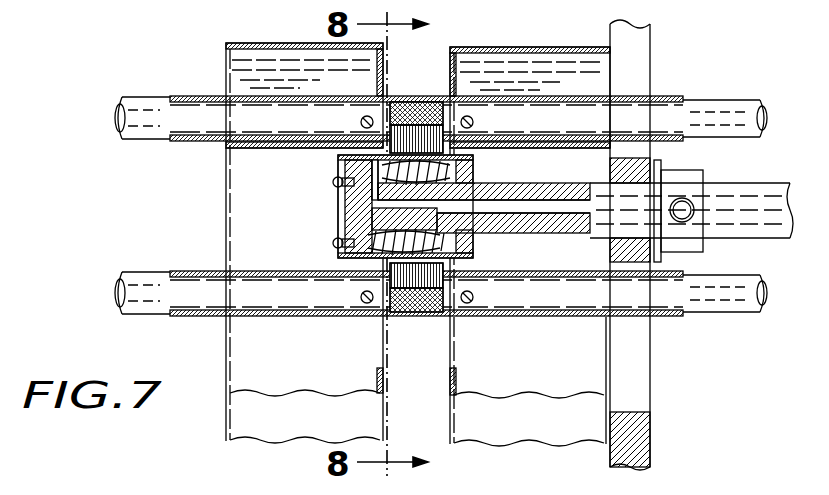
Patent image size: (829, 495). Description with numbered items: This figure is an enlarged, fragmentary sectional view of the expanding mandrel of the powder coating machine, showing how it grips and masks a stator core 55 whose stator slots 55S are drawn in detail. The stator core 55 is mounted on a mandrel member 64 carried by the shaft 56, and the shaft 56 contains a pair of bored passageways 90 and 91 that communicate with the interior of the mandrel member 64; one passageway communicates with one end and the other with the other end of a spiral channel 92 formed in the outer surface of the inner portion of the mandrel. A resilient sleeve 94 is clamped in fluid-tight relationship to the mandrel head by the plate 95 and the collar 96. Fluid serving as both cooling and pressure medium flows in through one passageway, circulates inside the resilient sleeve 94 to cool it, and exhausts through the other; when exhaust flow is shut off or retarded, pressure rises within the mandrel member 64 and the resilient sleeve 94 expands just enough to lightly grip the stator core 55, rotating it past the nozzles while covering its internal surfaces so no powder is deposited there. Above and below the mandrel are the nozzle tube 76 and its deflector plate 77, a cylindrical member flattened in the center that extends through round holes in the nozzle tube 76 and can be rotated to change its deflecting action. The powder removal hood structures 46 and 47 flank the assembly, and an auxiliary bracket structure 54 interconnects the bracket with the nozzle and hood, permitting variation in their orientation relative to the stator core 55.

The powder removal hood structure 46 is at (261, 43).
The powder removal hood structure 47 is at (545, 47).
The auxiliary bracket structure 54 is at (650, 430).
The stator core 55 is at (416, 315).
The stator slots 55S is at (421, 125).
The shaft 56 is at (554, 184).
The mandrel member 64 is at (356, 204).
The nozzle tube 76 is at (510, 97).
The deflector plate 77 is at (474, 123).
The bored passageway 90 is at (502, 196).
The bored passageway 91 is at (526, 221).
The spiral channel 92 is at (367, 233).
The resilient sleeve 94 is at (383, 158).
The plate 95 is at (337, 184).
The collar 96 is at (462, 164).